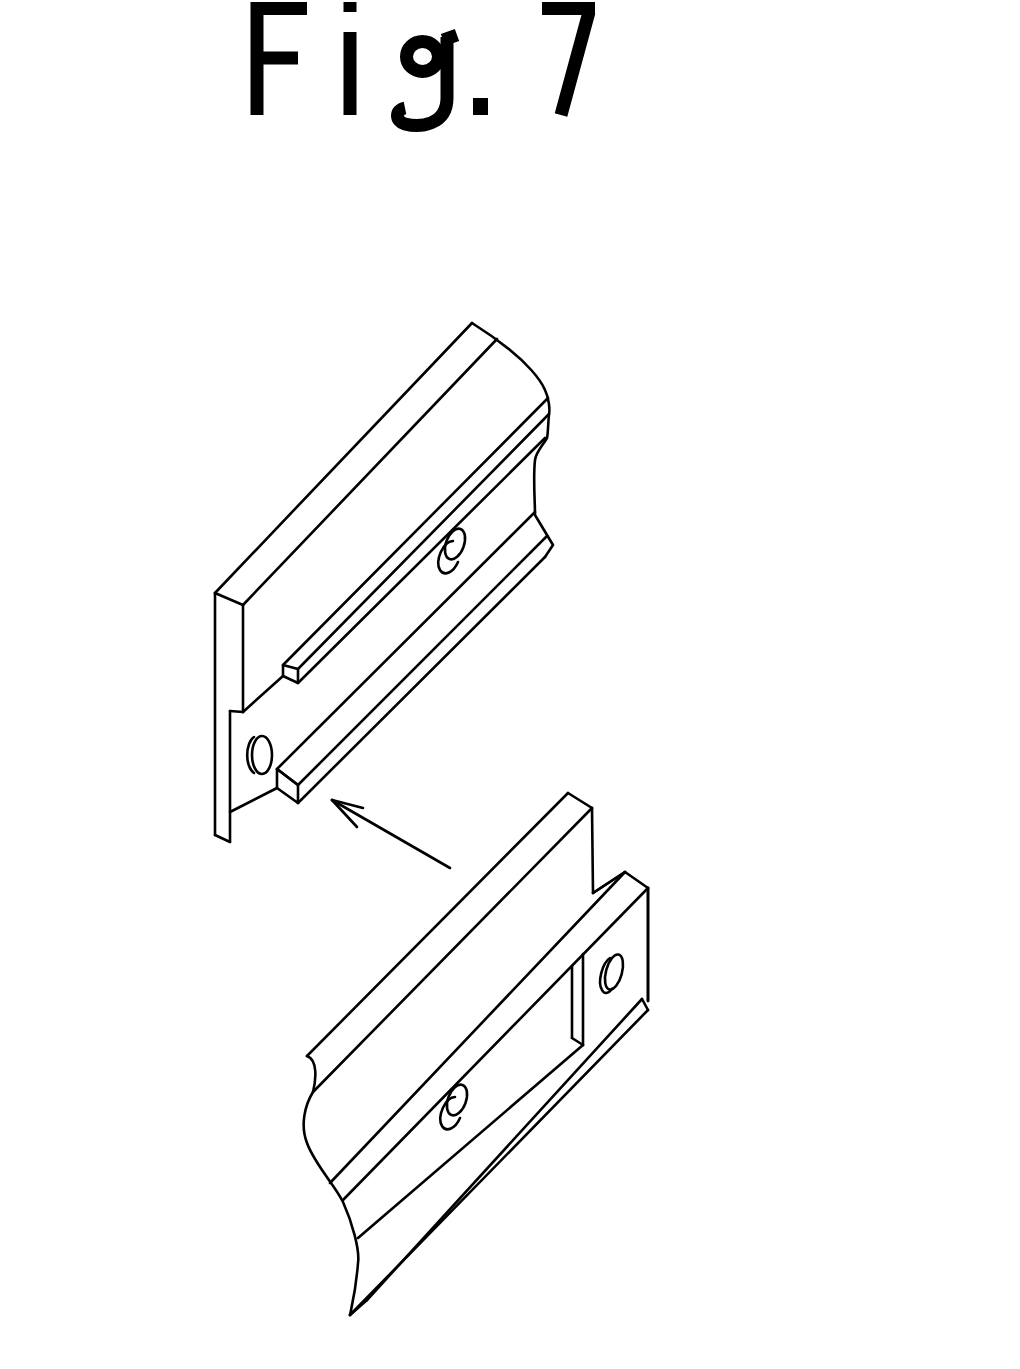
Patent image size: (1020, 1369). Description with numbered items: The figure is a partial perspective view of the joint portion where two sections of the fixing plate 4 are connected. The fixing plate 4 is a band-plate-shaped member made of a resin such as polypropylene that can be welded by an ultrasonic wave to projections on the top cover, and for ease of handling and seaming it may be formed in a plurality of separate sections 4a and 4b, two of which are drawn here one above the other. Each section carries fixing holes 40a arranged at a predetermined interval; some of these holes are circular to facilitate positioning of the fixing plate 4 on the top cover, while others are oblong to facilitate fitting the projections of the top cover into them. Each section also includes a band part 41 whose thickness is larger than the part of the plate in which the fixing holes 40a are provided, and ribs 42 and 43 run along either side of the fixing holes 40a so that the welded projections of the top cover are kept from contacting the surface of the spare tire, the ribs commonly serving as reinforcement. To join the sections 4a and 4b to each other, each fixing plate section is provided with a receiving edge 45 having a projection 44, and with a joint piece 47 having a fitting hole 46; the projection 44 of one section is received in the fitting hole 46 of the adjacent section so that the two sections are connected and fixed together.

The fixing plate 4 is at (150, 575).
The section of fixing plate 4a is at (336, 480).
The section of fixing plate 4b is at (585, 869).
The fixing hole 40a is at (452, 555).
The band part 41 is at (440, 433).
The rib 42 is at (530, 447).
The rib 43 is at (537, 560).
The projection 44 is at (265, 755).
The receiving edge 45 is at (250, 797).
The fitting hole 46 is at (615, 977).
The joint piece 47 is at (627, 940).